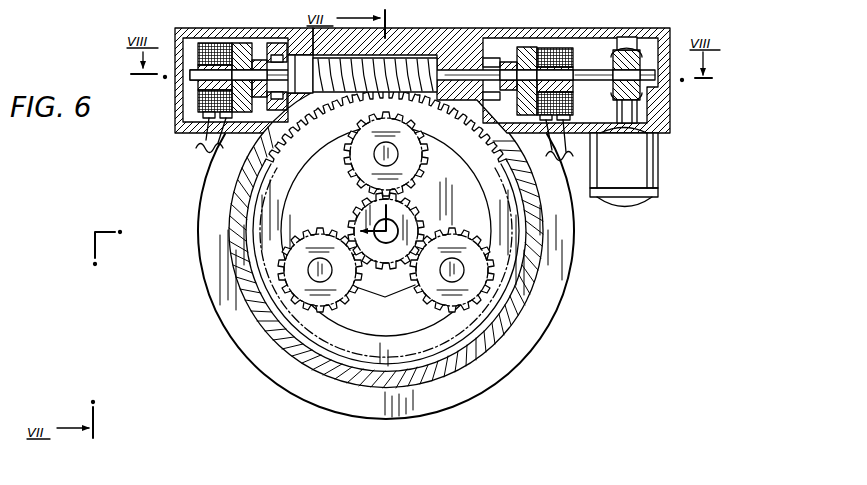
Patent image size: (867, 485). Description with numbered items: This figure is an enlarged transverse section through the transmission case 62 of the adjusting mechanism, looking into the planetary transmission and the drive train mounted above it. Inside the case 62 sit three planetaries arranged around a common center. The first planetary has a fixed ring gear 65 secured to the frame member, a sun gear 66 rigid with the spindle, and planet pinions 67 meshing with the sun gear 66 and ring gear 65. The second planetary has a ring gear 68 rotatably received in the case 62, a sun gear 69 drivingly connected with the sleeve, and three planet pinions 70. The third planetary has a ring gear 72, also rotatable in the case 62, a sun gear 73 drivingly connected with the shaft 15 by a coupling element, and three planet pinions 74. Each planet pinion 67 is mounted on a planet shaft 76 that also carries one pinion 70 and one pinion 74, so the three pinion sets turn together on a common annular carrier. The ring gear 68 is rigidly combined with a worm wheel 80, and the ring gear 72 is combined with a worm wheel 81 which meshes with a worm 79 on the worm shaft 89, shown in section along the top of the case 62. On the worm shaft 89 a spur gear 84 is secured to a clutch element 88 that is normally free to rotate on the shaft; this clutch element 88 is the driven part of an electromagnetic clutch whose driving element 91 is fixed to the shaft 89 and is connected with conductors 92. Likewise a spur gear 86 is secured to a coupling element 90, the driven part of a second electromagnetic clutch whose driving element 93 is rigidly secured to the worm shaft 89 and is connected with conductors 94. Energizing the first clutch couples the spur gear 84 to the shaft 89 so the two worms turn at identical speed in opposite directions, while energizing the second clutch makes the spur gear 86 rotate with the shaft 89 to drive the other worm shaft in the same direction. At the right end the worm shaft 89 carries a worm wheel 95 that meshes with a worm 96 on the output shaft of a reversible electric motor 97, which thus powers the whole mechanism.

The shaft 15 is at (377, 223).
The transmission case 62 is at (470, 36).
The fixed ring gear 65 is at (217, 245).
The sun gear 66 is at (377, 223).
The planet pinions 67 is at (386, 231).
The ring gear 68 is at (217, 245).
The sun gear 69 is at (377, 223).
The planet pinions 70 is at (386, 231).
The ring gear 72 is at (283, 233).
The sun gear 73 is at (353, 223).
The planet pinions 74 is at (385, 297).
The planet shaft 76 is at (398, 156).
The worm 79 is at (390, 95).
The worm wheel 80 is at (403, 273).
The worm wheel 81 is at (530, 287).
The spur gear 84 is at (276, 43).
The spur gear 86 is at (489, 58).
The clutch element 88 is at (247, 43).
The worm shaft 89 is at (207, 98).
The coupling element 90 is at (527, 47).
The driving element 91 is at (216, 44).
The conductors 92 is at (204, 150).
The driving element 93 is at (567, 48).
The conductors 94 is at (562, 158).
The worm wheel 95 is at (647, 53).
The worm 96 is at (637, 108).
The reversible electric motor 97 is at (650, 172).